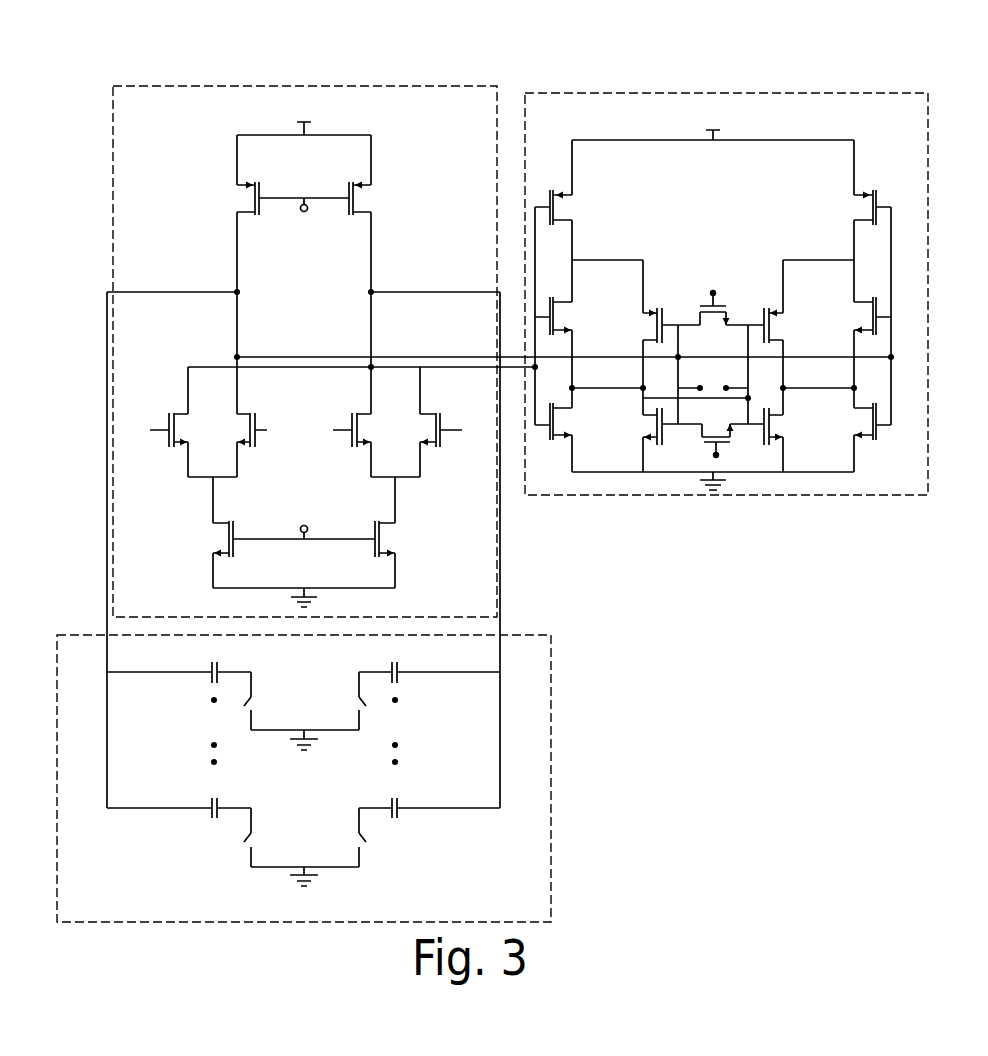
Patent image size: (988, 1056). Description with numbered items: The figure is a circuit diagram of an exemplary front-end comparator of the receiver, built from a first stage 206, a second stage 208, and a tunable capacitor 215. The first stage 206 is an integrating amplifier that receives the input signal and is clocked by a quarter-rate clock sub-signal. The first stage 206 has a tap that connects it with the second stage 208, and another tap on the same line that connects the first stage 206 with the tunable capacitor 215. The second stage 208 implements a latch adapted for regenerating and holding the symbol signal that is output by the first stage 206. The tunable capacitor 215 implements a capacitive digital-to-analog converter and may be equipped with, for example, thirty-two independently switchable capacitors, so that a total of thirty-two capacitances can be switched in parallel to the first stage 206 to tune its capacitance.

The first stage 206 is at (113, 142).
The second stage 208 is at (798, 495).
The tunable capacitor 215 is at (551, 692).